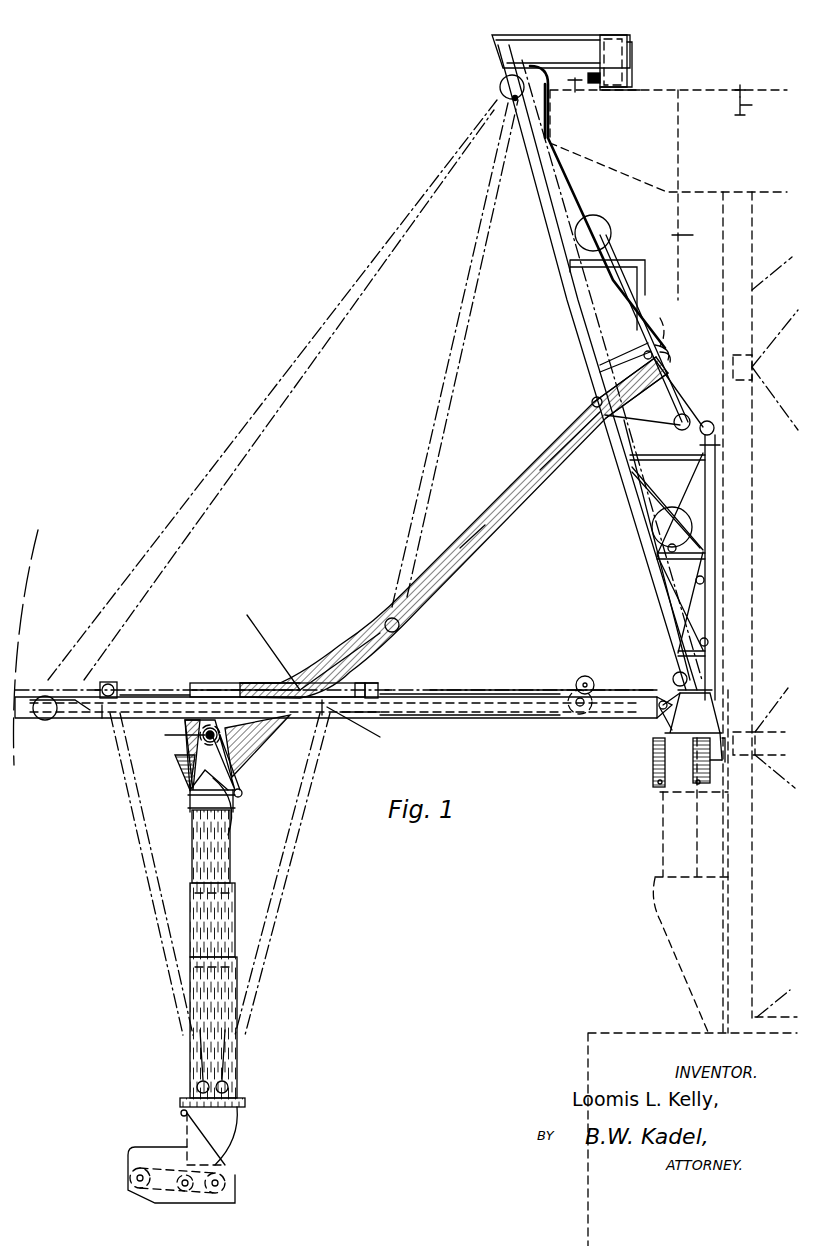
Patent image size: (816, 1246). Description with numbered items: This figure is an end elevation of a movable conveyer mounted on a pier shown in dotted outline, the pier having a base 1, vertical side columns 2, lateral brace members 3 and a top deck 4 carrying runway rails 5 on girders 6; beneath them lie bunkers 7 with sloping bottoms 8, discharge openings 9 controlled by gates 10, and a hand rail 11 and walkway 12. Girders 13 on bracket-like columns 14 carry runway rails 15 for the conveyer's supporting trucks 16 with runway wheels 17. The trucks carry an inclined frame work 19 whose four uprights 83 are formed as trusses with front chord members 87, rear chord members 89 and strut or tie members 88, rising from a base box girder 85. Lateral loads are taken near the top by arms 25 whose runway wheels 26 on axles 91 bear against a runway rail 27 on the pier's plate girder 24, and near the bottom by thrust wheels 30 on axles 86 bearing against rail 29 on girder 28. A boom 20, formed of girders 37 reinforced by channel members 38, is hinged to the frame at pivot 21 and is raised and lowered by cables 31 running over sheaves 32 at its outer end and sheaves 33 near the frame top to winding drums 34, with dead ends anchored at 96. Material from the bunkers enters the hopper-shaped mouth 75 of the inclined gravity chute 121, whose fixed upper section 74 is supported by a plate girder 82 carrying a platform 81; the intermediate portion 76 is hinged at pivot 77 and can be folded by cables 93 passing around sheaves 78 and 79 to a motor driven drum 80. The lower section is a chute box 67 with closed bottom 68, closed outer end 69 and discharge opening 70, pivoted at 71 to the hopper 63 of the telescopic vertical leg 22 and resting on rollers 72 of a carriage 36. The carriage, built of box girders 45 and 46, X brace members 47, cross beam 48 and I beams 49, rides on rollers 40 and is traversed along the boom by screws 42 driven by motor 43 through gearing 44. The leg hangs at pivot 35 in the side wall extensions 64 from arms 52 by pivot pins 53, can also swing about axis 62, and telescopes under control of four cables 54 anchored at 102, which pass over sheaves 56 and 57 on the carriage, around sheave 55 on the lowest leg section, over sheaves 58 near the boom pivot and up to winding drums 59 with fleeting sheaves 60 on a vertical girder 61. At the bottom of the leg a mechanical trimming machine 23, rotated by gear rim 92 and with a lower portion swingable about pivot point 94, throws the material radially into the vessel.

The base 1 is at (630, 1032).
The vertical side columns 2 is at (748, 640).
The lateral brace members 3 is at (784, 332).
The top deck 4 is at (748, 589).
The runway rails 5 is at (742, 90).
The girders 6 is at (750, 106).
The material pockets or bunkers 7 is at (674, 236).
The outwardly sloping bottoms 8 is at (780, 258).
The discharge openings 9 is at (667, 330).
The gates 10 is at (700, 352).
The hand rail 11 is at (633, 60).
The walkway 12 is at (680, 90).
The girders 13 is at (700, 830).
The bracket-like columns 14 is at (682, 918).
The runway rails 15 is at (695, 783).
The supporting truck 16 is at (660, 752).
The runway wheels 17 is at (665, 773).
The frame work 19 is at (632, 506).
The boom 20 is at (470, 720).
The pivot 21 is at (656, 716).
The telescopic vertical gravity leg 22 is at (226, 925).
The mechanical trimming machine 23 is at (222, 1172).
The plate girder or I beam 24 is at (575, 93).
The arms 25 is at (536, 45).
The runway wheels 26 is at (624, 40).
The runway rail 27 is at (595, 86).
The girder 28 is at (725, 762).
The runway rail 29 is at (717, 773).
The thrust wheels 30 is at (707, 726).
The cables 31 is at (245, 405).
The sheaves 32 is at (50, 714).
The sheaves 33 is at (503, 83).
The winding drums 34 is at (654, 526).
The pivot 35 is at (205, 737).
The carriage 36 is at (226, 683).
The girders 37 is at (627, 696).
The channel members 38 is at (497, 697).
The rollers or wheels 40 is at (96, 690).
The motor driven screws 42 is at (470, 711).
The motor 43 is at (585, 676).
The gearing 44 is at (583, 714).
The box girders 45 is at (385, 715).
The box girders 46 is at (110, 682).
The X brace members 47 is at (140, 690).
The cross beam 48 is at (188, 690).
The I beams 49 is at (250, 686).
The extensions or arms 52 is at (222, 730).
The pivot pins 53 is at (211, 744).
The cables 54 is at (709, 424).
The sheave 55 is at (196, 1087).
The sheave 56 is at (102, 720).
The sheave 57 is at (345, 705).
The sheaves 58 is at (674, 678).
The winding drums 59 is at (676, 422).
The fleeting sheave 60 is at (716, 430).
The girder 61 is at (717, 454).
The pivoting axis 62 is at (190, 797).
The material receiving hopper 63 is at (183, 768).
The side wall extensions 64 is at (205, 770).
The chute box 67 is at (310, 680).
The closed bottom 68 is at (283, 743).
The closed outer end 69 is at (178, 730).
The discharge opening 70 is at (231, 828).
The pivot point 71 is at (243, 792).
The rollers 72 is at (372, 683).
The uppermost section 74 is at (655, 384).
The hopper-shaped mouth 75 is at (668, 342).
The intermediate portion 76 is at (466, 548).
The pivot point 77 is at (591, 399).
The sheaves 78 is at (400, 625).
The sheaves 79 is at (597, 207).
The motor driven drum 80 is at (600, 228).
The platform 81 is at (628, 264).
The plate girder 82 is at (640, 343).
The columns or uprights 83 is at (662, 586).
The box girder 85 is at (720, 697).
The axles 86 is at (710, 680).
The front chord members 87 is at (618, 450).
The strut or tie members 88 is at (646, 353).
The rear chord members 89 is at (674, 373).
The axles 91 is at (610, 36).
The gear rim 92 is at (246, 1103).
The cables 93 is at (442, 393).
The pivot point 94 is at (181, 1114).
The anchor point 96 is at (512, 98).
The anchor point 102 is at (70, 698).
The gravity chute 121 is at (520, 500).